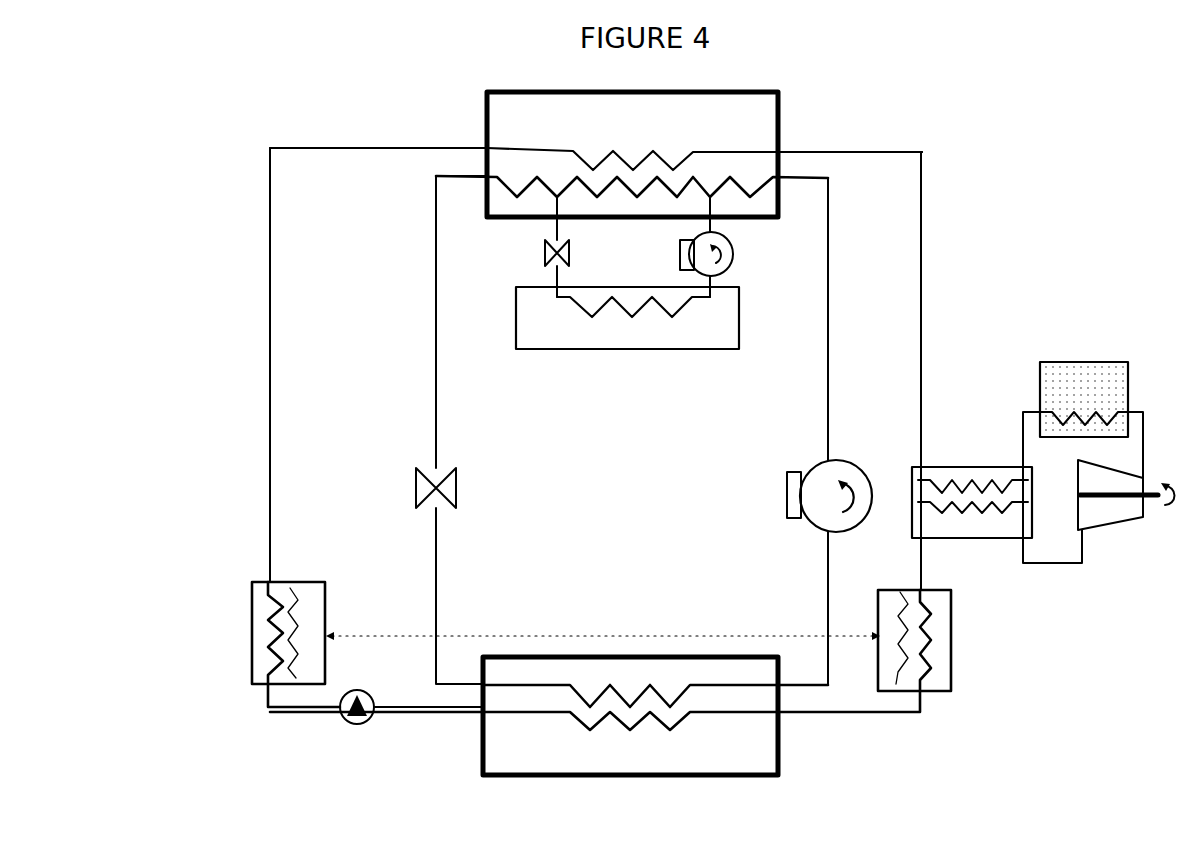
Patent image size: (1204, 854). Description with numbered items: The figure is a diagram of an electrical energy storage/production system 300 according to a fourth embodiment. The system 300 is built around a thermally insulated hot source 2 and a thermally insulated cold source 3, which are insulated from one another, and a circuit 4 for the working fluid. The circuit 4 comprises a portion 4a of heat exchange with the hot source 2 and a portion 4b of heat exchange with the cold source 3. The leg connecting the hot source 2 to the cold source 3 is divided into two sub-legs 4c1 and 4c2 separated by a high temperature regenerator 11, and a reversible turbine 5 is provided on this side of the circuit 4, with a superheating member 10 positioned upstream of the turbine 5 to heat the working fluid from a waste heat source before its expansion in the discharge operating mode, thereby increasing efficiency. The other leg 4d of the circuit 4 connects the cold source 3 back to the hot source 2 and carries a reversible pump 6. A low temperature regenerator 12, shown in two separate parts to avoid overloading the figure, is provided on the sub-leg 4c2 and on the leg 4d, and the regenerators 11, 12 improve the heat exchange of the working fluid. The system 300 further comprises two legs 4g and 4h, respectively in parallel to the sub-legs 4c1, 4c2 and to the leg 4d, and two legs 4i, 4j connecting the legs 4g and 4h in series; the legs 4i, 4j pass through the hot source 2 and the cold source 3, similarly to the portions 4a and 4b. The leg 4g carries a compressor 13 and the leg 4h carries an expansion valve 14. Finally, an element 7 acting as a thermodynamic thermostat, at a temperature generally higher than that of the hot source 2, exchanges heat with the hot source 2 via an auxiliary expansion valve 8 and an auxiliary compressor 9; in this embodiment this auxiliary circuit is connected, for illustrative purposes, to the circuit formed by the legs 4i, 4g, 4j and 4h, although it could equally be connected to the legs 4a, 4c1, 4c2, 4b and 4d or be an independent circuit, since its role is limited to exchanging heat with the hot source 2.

The hot source 2 is at (780, 104).
The cold source 3 is at (778, 769).
The circuit 4 is at (878, 148).
The portion of heat exchange with the hot source 4a is at (520, 150).
The portion of heat exchange with the cold source 4b is at (755, 712).
The sub-leg 4c1 is at (924, 290).
The sub-leg 4c2 is at (922, 571).
The leg 4d is at (268, 425).
The leg 4g is at (830, 330).
The leg 4h is at (434, 405).
The leg 4i is at (497, 172).
The leg 4j is at (727, 686).
The reversible turbine 5 is at (1112, 500).
The reversible pump 6 is at (340, 717).
The element acting as a thermodynamic thermostat 7 is at (657, 352).
The auxiliary expansion valve 8 is at (542, 253).
The auxiliary compressor 9 is at (737, 259).
The superheating member 10 is at (1082, 361).
The high temperature regenerator 11 is at (968, 466).
The low temperature regenerator 12 is at (250, 618).
The compressor 13 is at (786, 503).
The expansion valve 14 is at (457, 490).
The system 300 is at (1000, 143).